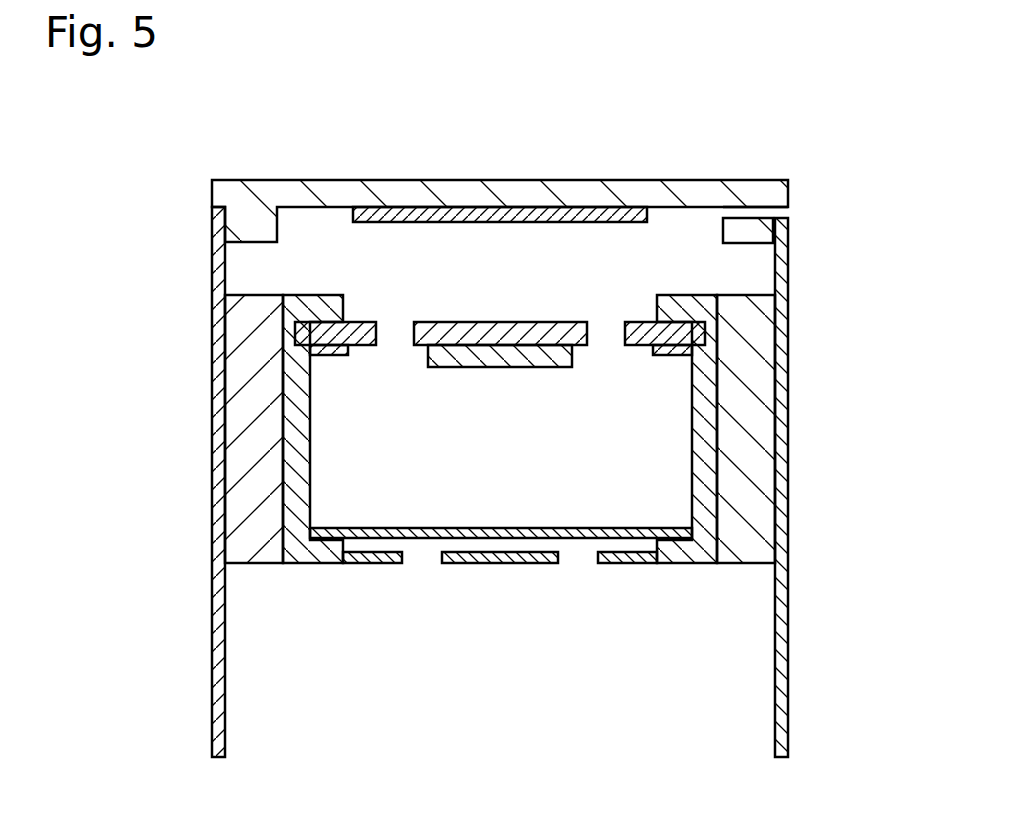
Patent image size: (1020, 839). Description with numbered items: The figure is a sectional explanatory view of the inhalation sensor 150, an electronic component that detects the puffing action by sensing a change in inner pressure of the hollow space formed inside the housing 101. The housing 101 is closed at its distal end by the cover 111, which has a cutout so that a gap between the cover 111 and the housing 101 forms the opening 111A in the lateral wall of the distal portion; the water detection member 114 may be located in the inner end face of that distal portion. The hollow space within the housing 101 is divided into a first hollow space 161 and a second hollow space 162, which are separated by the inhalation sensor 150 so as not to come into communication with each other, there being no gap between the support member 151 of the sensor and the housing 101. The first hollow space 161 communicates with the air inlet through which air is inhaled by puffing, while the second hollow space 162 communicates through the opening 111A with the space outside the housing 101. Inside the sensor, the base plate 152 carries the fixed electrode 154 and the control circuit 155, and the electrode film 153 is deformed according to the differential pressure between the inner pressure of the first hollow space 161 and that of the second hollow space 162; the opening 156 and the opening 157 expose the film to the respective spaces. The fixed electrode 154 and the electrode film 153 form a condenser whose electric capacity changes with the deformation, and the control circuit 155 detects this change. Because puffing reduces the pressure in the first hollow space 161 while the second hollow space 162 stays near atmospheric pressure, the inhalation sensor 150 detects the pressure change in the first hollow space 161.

The housing 101 is at (212, 652).
The cover 111 is at (392, 190).
The opening 111A is at (778, 212).
The water detection member 114 is at (535, 207).
The inhalation sensor 150 is at (500, 455).
The support member 151 is at (255, 428).
The base plate 152 is at (500, 320).
The electrode film 153 is at (583, 540).
The fixed electrode 154 is at (662, 356).
The control circuit 155 is at (485, 368).
The opening 156 is at (420, 566).
The opening 157 is at (397, 313).
The first hollow space 161 is at (735, 662).
The second hollow space 162 is at (735, 267).